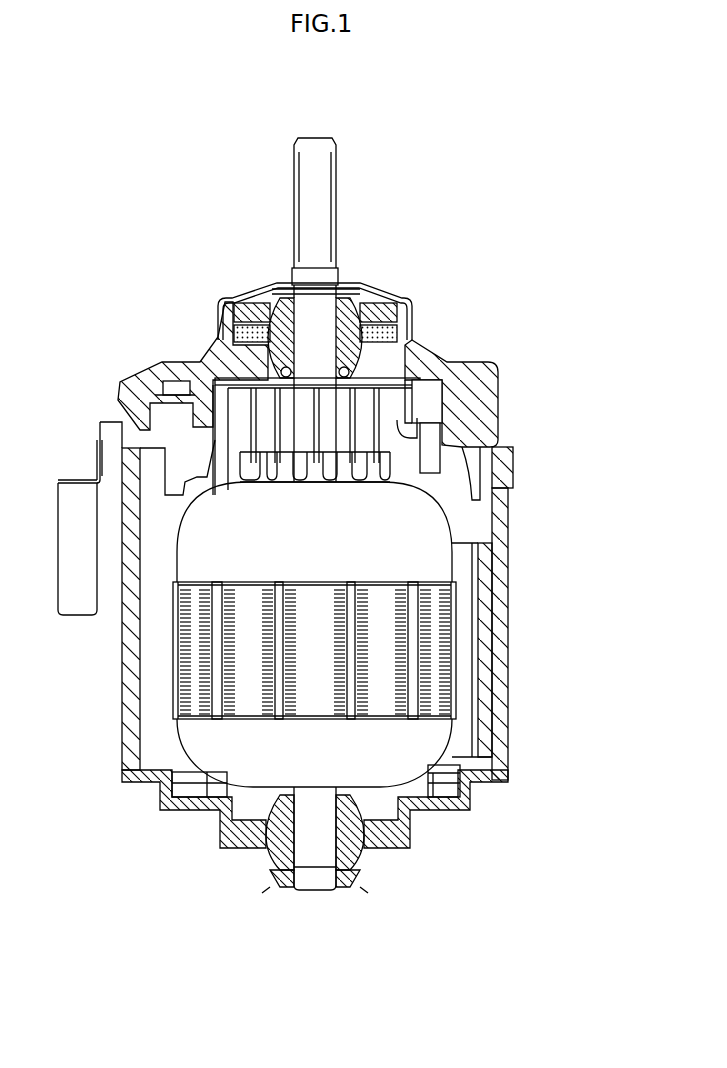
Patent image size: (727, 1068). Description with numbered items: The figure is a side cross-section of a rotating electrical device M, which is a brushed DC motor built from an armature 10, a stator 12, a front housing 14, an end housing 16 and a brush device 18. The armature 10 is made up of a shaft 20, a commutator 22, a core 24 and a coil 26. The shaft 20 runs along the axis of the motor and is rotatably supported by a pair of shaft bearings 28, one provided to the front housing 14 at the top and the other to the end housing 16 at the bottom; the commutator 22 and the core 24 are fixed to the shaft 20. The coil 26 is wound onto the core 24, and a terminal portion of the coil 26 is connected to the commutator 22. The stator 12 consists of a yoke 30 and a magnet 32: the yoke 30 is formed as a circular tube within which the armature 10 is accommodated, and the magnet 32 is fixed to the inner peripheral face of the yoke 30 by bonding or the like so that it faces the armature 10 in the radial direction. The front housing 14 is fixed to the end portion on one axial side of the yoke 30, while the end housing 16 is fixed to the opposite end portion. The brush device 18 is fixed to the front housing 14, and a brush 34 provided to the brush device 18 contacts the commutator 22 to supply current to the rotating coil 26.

The rotating electrical device M is at (404, 130).
The armature 10 is at (390, 634).
The stator 12 is at (367, 610).
The front housing 14 is at (508, 406).
The end housing 16 is at (483, 786).
The brush device 18 is at (398, 378).
The shaft 20 is at (337, 195).
The commutator 22 is at (468, 362).
The core 24 is at (456, 698).
The coil 26 is at (440, 752).
The shaft bearings 28 is at (360, 318).
The yoke 30 is at (508, 552).
The magnet 32 is at (490, 577).
The brush 34 is at (413, 402).